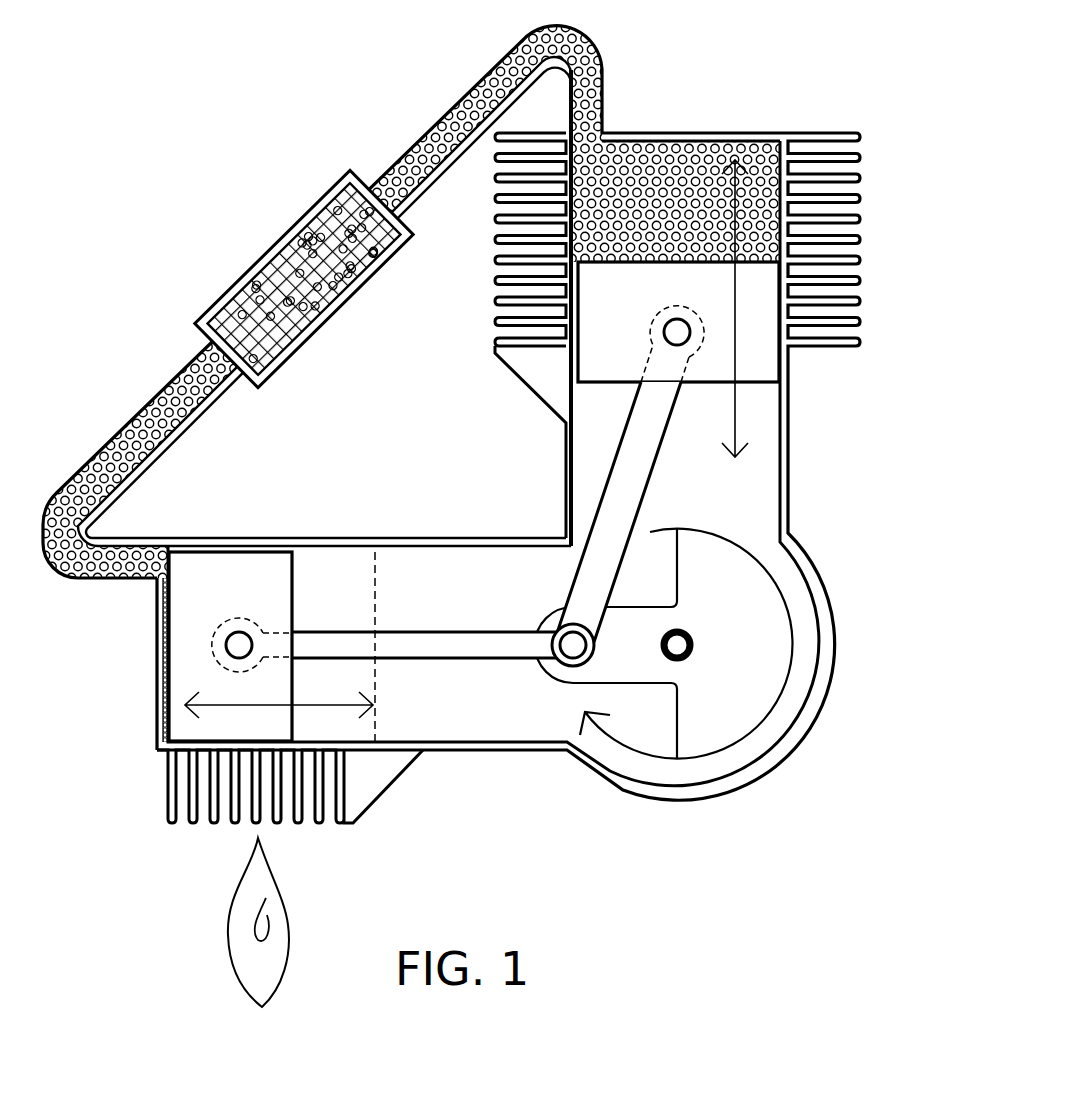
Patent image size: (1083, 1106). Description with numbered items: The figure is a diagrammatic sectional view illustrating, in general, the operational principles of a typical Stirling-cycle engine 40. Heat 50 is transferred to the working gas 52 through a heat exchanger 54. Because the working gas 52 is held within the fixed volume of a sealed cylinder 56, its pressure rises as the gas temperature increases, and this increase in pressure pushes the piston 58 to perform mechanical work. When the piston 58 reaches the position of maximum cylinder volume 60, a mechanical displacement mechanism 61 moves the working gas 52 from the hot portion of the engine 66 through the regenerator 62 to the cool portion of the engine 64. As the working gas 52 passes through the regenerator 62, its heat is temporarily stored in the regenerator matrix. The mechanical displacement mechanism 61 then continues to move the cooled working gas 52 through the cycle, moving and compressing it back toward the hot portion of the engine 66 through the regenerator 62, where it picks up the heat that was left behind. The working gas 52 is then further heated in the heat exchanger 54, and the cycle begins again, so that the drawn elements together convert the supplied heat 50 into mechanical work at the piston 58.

The Stirling-cycle engine 40 is at (270, 157).
The heat 50 is at (220, 945).
The working gas 52 is at (140, 412).
The heat exchanger 54 is at (163, 778).
The sealed cylinder 56 is at (163, 608).
The piston 58 is at (292, 572).
The position of maximum cylinder volume 60 is at (375, 585).
The mechanical displacement mechanism 61 is at (680, 403).
The regenerator 62 is at (258, 258).
The cool portion of the engine 64 is at (729, 124).
The hot portion of the engine 66 is at (150, 665).